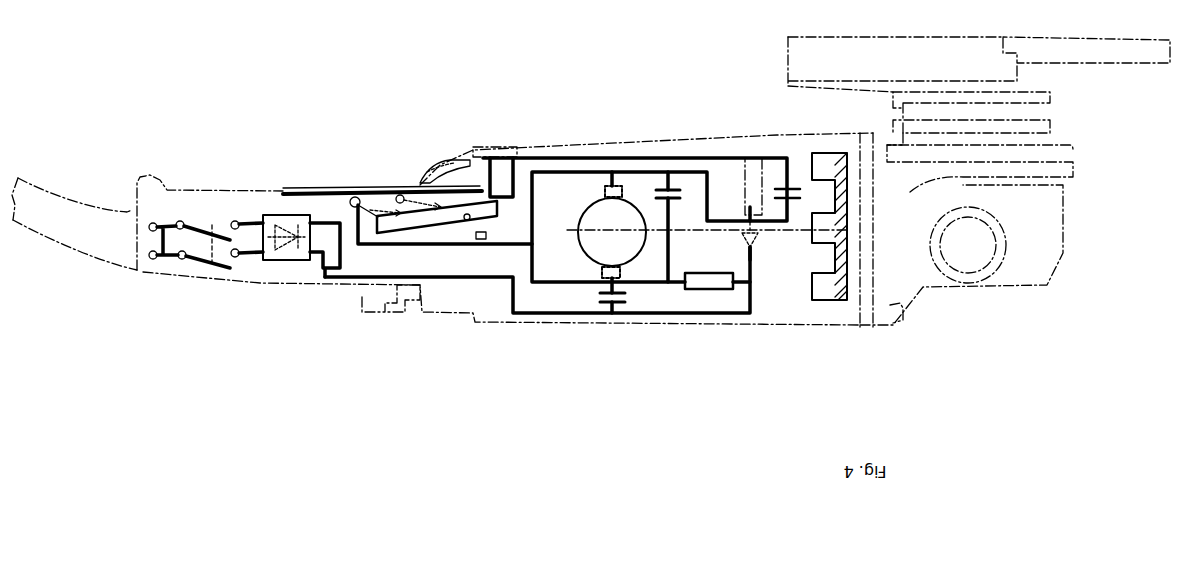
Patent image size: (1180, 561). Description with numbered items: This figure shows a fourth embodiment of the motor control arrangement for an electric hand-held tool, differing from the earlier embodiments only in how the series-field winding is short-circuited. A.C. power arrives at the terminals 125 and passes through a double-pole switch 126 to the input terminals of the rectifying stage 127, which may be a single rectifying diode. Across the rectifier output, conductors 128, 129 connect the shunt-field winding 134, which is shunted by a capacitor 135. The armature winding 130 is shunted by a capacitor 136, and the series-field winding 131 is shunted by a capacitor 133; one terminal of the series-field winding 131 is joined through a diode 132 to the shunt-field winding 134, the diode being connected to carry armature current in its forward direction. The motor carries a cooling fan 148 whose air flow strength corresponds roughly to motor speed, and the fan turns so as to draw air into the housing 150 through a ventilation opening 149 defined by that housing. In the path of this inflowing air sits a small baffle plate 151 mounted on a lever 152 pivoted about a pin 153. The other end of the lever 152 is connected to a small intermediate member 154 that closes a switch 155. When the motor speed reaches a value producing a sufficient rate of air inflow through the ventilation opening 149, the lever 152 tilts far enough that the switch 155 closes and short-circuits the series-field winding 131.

The terminals 125 is at (173, 258).
The double-pole switch 126 is at (218, 278).
The rectifying stage 127 is at (265, 214).
The conductor 128 is at (440, 278).
The conductor 129 is at (323, 217).
The armature winding 130 is at (627, 210).
The series-field winding 131 is at (763, 155).
The diode 132 is at (757, 243).
The capacitor 133 is at (802, 188).
The shunt-field winding 134 is at (713, 290).
The capacitor 135 is at (627, 303).
The capacitor 136 is at (688, 190).
The cooling fan 148 is at (823, 283).
The ventilation opening 149 is at (427, 172).
The housing 150 is at (487, 147).
The baffle plate 151 is at (500, 170).
The lever 152 is at (413, 183).
The pin 153 is at (467, 233).
The intermediate member 154 is at (380, 217).
The switch 155 is at (377, 187).